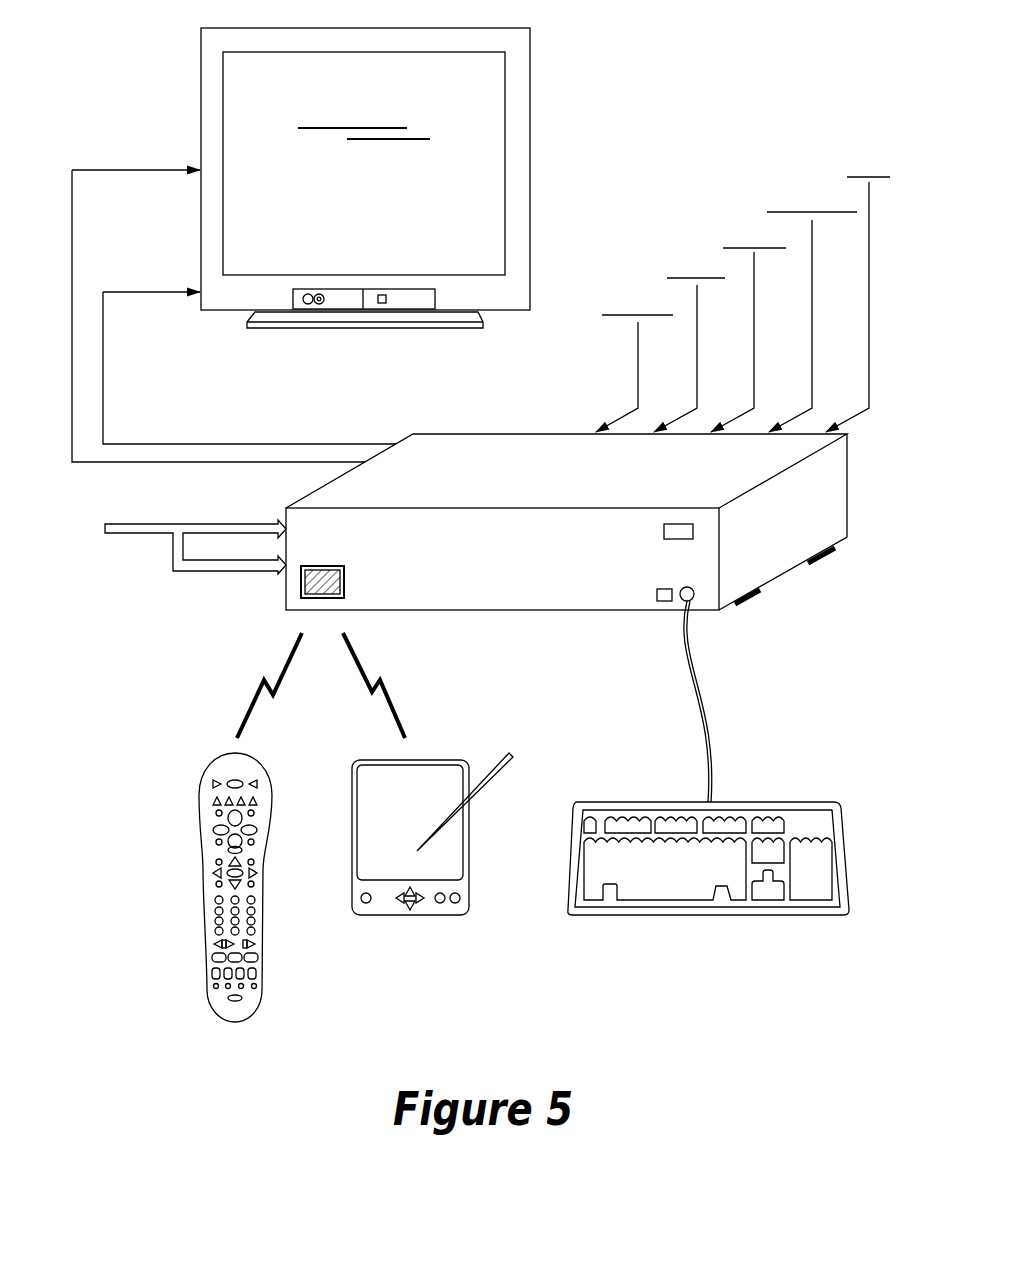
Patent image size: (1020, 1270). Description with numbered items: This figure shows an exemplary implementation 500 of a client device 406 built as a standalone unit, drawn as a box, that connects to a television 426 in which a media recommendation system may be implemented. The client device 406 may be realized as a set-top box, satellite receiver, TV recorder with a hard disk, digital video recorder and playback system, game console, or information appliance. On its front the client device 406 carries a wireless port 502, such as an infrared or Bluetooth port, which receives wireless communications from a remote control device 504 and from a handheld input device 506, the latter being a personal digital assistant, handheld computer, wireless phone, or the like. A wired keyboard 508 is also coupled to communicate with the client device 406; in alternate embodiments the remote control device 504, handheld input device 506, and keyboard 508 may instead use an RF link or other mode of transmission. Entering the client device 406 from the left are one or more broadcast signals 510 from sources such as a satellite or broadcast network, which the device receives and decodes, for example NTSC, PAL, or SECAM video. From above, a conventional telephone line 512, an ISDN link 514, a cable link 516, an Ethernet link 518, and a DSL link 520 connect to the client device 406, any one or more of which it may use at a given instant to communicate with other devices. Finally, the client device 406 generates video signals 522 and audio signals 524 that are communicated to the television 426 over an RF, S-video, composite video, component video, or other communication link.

The exemplary implementation 500 is at (647, 58).
The client device 406 is at (475, 433).
The television 426 is at (480, 265).
The wireless port 502 is at (335, 565).
The remote control device 504 is at (202, 780).
The handheld input device 506 is at (428, 760).
The wired keyboard 508 is at (753, 803).
The broadcast signals 510 is at (158, 533).
The telephone line 512 is at (637, 278).
The ISDN link 514 is at (697, 237).
The cable link 516 is at (755, 207).
The Ethernet link 518 is at (812, 172).
The DSL link 520 is at (870, 135).
The video signal(s) 522 is at (162, 203).
The audio signal(s) 524 is at (162, 327).